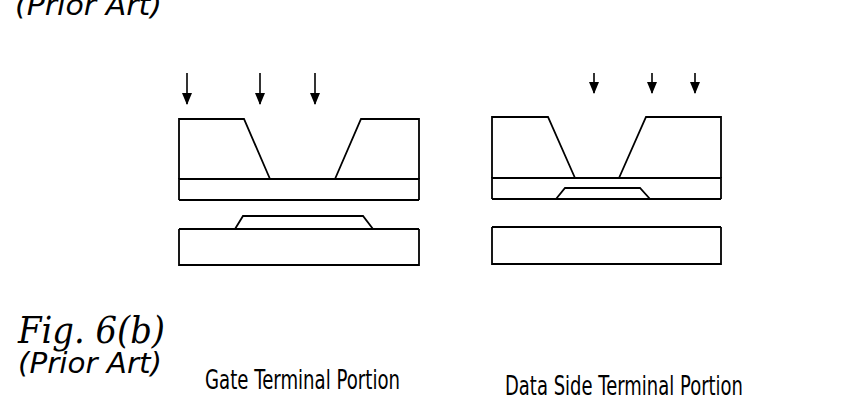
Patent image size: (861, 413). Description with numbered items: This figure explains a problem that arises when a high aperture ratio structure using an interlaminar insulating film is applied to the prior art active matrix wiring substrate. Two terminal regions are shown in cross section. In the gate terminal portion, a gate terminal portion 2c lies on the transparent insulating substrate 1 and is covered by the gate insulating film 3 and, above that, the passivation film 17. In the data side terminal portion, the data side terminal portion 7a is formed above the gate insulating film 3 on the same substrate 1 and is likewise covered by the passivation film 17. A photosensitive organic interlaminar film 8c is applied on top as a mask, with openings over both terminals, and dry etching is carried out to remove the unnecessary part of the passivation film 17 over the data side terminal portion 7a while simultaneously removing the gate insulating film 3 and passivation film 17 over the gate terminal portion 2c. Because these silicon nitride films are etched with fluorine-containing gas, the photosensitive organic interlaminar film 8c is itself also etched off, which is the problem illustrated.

The transparent insulating substrate 1 is at (400, 268).
The gate insulating film 3 is at (487, 220).
The gate terminal portion 2c is at (235, 220).
The data side terminal portion 7a is at (653, 201).
The passivation film 17 is at (421, 161).
The photosensitive organic interlaminar film 8c is at (501, 113).